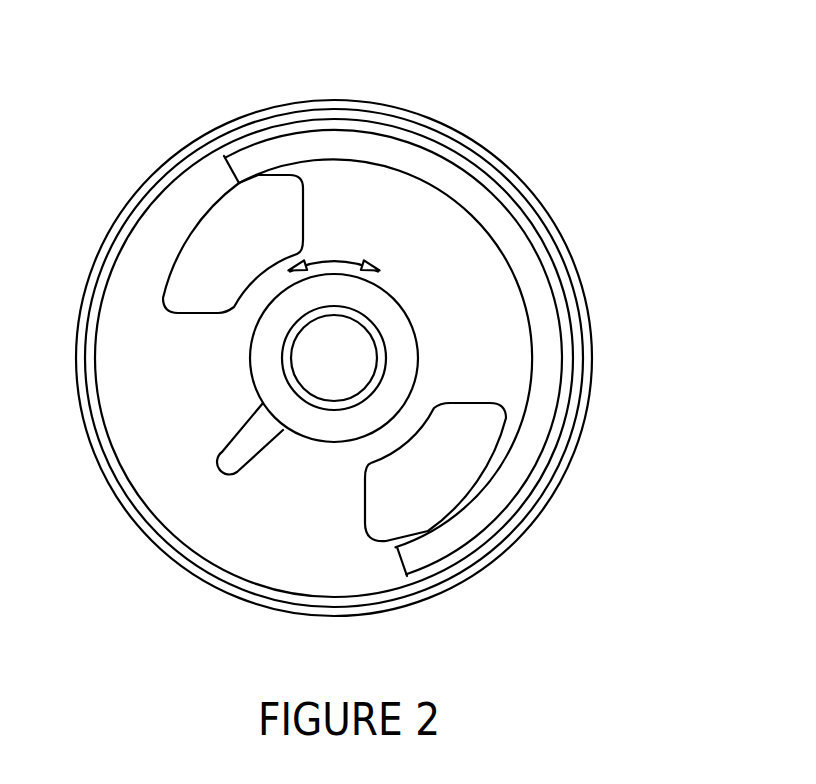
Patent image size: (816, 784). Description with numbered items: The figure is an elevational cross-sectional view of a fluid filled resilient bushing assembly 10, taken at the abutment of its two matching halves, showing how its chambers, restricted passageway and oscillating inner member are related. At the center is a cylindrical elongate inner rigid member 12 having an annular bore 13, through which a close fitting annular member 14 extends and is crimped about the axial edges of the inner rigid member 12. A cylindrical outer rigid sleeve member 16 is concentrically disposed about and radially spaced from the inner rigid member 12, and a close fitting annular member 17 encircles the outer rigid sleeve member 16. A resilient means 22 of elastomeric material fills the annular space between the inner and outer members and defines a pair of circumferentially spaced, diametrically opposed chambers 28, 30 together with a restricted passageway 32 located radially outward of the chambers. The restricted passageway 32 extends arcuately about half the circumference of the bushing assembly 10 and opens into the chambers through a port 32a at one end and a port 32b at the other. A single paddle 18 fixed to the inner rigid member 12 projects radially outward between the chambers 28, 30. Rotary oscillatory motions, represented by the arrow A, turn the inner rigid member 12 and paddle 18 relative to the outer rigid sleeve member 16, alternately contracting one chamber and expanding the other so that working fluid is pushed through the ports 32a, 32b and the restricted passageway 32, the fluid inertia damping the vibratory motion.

The fluid filled resilient bushing assembly 10 is at (592, 191).
The inner rigid member 12 is at (397, 392).
The annular bore 13 is at (327, 357).
The close fitting annular member 14 is at (317, 405).
The outer rigid sleeve member 16 is at (470, 150).
The close fitting annular member 17 is at (322, 100).
The single paddle 18 is at (242, 452).
The resilient means 22 is at (438, 270).
The chamber 28 is at (223, 253).
The chamber 30 is at (457, 458).
The restricted passageway 32 is at (542, 313).
The port 32a is at (258, 173).
The port 32b is at (418, 535).
The arrow A is at (333, 260).